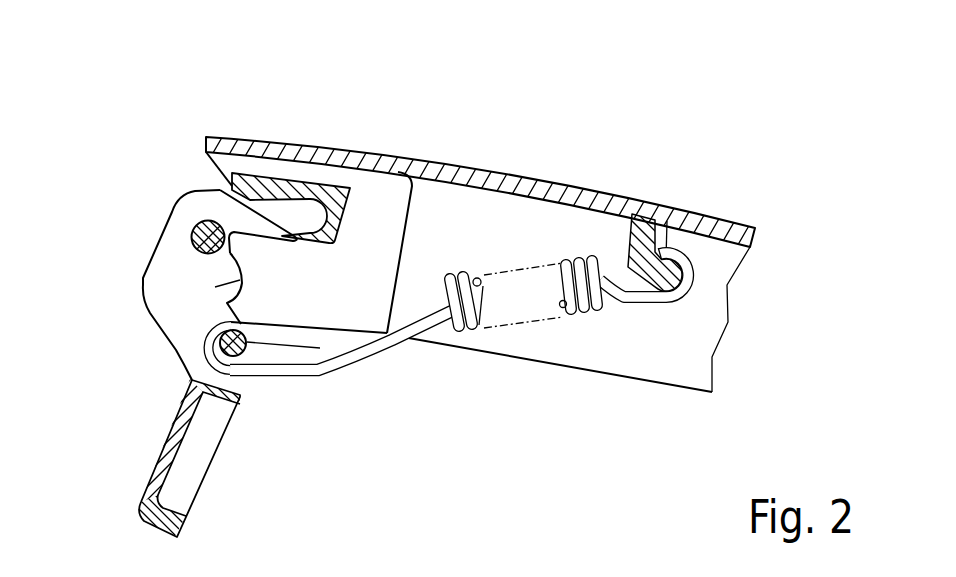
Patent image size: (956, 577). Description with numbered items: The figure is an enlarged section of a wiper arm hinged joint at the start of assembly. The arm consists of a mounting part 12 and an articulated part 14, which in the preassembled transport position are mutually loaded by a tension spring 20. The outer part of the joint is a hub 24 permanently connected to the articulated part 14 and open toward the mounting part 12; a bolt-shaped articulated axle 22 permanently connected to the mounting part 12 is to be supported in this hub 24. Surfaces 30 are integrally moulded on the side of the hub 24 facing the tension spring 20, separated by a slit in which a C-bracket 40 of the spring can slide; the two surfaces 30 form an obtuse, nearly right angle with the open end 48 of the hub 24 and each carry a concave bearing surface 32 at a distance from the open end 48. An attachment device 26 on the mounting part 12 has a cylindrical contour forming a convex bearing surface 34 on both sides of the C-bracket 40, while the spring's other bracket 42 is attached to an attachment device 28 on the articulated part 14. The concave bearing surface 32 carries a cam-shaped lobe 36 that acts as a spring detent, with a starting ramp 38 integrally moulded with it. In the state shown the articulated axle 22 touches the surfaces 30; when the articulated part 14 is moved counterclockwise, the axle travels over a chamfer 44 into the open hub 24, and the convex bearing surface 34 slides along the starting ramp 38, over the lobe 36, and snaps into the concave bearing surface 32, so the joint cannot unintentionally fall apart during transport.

The mounting part 12 is at (172, 493).
The articulated part 14 is at (583, 188).
The tension spring 20 is at (572, 290).
The articulated axle 22 is at (146, 203).
The hub 24 is at (335, 177).
The attachment device 26 is at (292, 431).
The attachment device 28 is at (666, 247).
The surfaces 30 is at (210, 221).
The concave bearing surface 32 is at (240, 280).
The convex bearing surface 34 is at (355, 431).
The lobe 36 is at (227, 304).
The starting ramp 38 is at (229, 302).
The C-bracket 40 is at (425, 318).
The bracket 42 is at (699, 238).
The chamfer 44 is at (229, 232).
The open end 48 is at (302, 141).